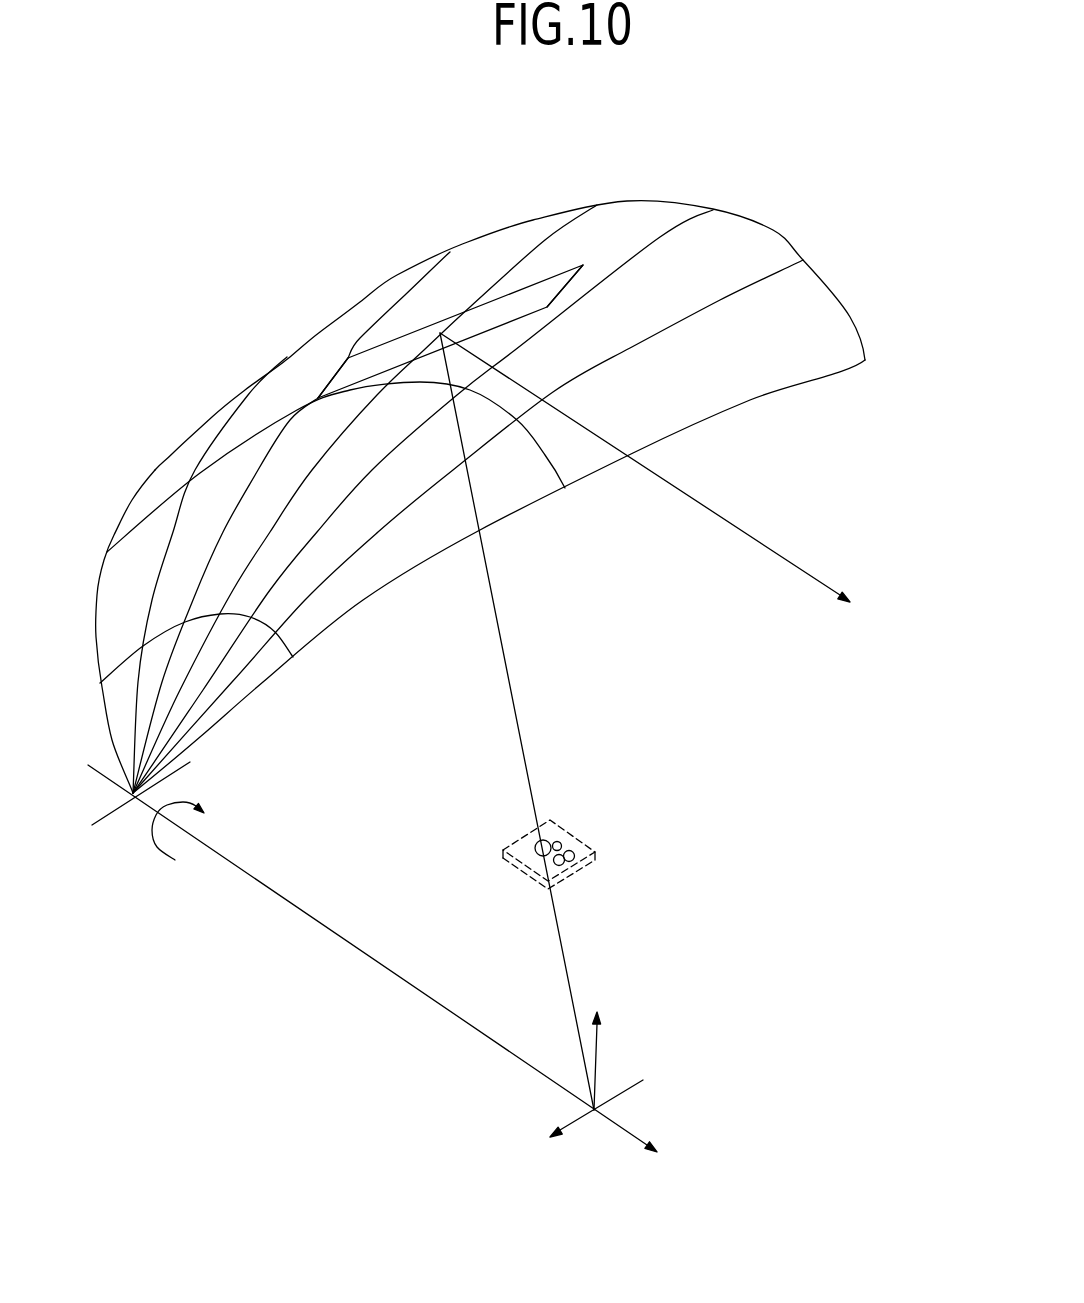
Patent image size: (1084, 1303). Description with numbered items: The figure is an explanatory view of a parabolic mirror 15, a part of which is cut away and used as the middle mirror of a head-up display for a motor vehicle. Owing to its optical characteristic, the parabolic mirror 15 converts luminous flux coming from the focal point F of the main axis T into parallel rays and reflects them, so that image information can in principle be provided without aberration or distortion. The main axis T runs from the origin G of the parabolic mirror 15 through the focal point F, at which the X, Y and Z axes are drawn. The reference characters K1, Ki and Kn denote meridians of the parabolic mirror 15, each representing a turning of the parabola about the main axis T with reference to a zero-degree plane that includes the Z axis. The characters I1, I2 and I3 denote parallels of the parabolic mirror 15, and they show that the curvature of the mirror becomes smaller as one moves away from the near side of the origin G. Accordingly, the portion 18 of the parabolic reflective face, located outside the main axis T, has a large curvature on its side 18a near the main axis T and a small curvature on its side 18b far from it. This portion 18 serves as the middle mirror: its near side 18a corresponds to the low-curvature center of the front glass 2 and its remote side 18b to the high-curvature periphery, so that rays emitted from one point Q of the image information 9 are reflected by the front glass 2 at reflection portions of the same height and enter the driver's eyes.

The parabolic mirror 15 is at (472, 481).
The portion of the parabolic reflective face 18 is at (457, 285).
The near side of the portion of the reflective face 18a is at (343, 373).
The remote side of the portion of the reflective face 18b is at (558, 282).
The front glass 2 is at (685, 484).
The image information 9 is at (556, 829).
The point of the image information Q is at (543, 840).
The origin of the parabolic mirror G is at (135, 800).
The focal point F is at (593, 1114).
The main axis T is at (383, 970).
The meridian K1 is at (95, 585).
The meridian Ki is at (545, 238).
The meridian Kn is at (762, 398).
The parallel I1 is at (260, 617).
The parallel I2 is at (557, 465).
The parallel I3 is at (783, 237).
The X-axis X is at (534, 1139).
The Y-axis Y is at (668, 1162).
The Z-axis Z is at (599, 1002).